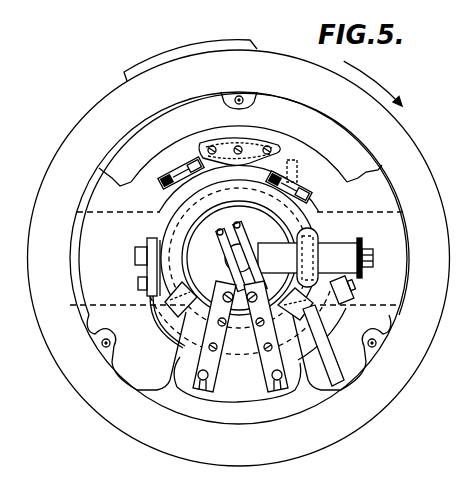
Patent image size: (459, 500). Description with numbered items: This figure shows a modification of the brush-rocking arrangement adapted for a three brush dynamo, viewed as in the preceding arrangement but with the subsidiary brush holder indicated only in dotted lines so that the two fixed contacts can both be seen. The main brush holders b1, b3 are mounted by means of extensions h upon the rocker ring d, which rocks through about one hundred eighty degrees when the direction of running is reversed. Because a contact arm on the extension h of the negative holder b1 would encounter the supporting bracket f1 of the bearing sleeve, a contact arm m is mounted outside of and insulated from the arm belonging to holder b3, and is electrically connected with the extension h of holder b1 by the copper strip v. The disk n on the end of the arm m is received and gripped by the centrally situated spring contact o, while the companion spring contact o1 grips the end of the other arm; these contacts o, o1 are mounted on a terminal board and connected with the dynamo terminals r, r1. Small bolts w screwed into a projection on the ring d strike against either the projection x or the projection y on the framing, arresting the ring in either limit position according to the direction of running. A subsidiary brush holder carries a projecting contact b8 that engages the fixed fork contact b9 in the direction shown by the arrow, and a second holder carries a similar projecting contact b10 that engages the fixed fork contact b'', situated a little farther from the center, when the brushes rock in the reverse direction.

The fixed fork contact b'' is at (181, 154).
The projecting contact b8 is at (283, 158).
The fixed fork contact b9 is at (307, 173).
The brush holder b1 is at (140, 256).
The brush holder b3 is at (380, 254).
The projecting contact b10 is at (336, 306).
The rocker ring d is at (186, 197).
The disk n is at (239, 258).
The contact arm m is at (310, 258).
The spring contact o is at (230, 248).
The spring contact o1 is at (250, 249).
The bolt w is at (318, 245).
The extension h is at (150, 262).
The copper strip v is at (148, 307).
The projection y is at (170, 308).
The projection x is at (295, 304).
The supporting bracket f1 is at (316, 365).
The dynamo terminal r1 is at (214, 342).
The dynamo terminal r is at (266, 342).